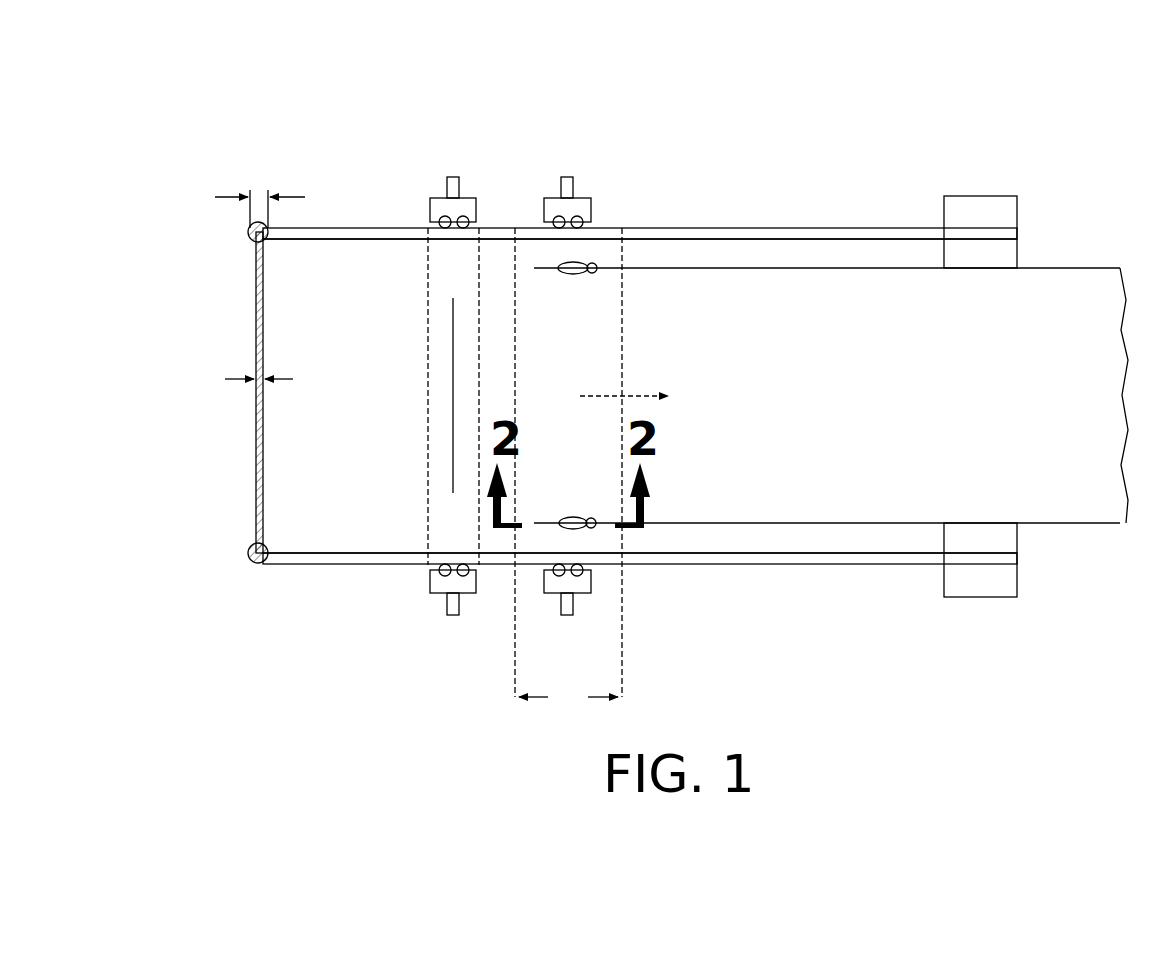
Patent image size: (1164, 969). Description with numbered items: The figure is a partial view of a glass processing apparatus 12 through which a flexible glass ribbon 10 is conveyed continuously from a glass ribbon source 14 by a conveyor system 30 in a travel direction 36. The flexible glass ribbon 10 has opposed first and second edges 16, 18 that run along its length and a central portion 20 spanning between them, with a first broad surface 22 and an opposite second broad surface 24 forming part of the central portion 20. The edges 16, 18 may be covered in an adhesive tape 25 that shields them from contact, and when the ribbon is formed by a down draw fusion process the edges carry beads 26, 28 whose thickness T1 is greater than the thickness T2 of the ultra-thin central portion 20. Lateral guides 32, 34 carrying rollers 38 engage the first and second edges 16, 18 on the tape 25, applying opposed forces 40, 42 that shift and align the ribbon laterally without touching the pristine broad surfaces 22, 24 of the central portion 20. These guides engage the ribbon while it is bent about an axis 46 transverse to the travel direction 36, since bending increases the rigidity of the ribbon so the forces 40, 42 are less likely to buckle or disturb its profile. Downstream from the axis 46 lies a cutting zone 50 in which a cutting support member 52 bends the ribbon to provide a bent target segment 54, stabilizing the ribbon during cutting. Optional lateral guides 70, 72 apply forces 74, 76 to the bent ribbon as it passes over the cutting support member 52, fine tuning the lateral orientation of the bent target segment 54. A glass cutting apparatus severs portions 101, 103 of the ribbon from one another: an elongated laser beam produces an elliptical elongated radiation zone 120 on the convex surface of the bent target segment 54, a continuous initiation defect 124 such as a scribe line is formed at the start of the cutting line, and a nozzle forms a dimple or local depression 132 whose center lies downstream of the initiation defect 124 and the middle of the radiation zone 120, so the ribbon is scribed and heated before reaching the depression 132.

The flexible glass ribbon 10 is at (659, 343).
The glass processing apparatus 12 is at (604, 317).
The glass ribbon source 14 is at (250, 165).
The first edge 16 is at (675, 565).
The second edge 18 is at (652, 228).
The central portion 20 is at (745, 405).
The first broad surface 22 is at (795, 296).
The second broad surface 24 is at (843, 580).
The adhesive tape 25 is at (684, 238).
The bead 26 is at (250, 558).
The bead 28 is at (250, 228).
The conveyor system 30 is at (440, 163).
The lateral guide 32 is at (423, 560).
The lateral guide 34 is at (467, 198).
The travel direction 36 is at (598, 395).
The rollers 38 is at (445, 560).
The force 40 is at (453, 624).
The force 42 is at (453, 170).
The axis 46 is at (453, 345).
The cutting zone 50 is at (568, 696).
The cutting support member 52 is at (623, 298).
The bent target segment 54 is at (603, 505).
The lateral guide 70 is at (555, 595).
The lateral guide 72 is at (590, 200).
The force 74 is at (567, 665).
The force 76 is at (567, 172).
The portion 101 is at (900, 543).
The portion 103 is at (1062, 275).
The elongated radiation zone 120 is at (572, 275).
The continuous initiation defect 124 is at (540, 266).
The local depression 132 is at (592, 274).
The thickness T1 is at (260, 197).
The thickness T2 is at (262, 379).